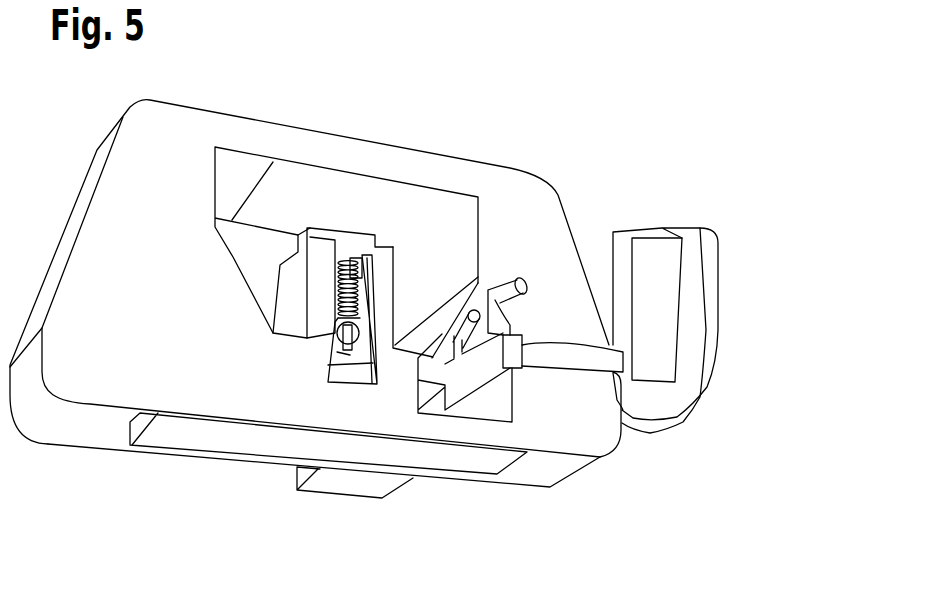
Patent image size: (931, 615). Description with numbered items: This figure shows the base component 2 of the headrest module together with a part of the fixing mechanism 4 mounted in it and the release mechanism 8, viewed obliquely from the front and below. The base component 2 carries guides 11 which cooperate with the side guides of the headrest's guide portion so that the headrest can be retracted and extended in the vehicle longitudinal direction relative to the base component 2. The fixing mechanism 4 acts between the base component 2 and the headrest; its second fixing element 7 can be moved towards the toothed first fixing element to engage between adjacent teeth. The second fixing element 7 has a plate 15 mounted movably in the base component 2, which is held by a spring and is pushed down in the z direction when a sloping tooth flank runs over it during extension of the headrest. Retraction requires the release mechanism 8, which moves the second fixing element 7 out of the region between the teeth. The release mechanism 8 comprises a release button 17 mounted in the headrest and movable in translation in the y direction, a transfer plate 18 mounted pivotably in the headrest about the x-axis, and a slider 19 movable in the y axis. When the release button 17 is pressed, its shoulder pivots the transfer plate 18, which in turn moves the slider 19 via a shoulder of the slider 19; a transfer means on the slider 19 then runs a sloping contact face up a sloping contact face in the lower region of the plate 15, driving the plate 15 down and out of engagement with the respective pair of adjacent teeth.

The base component 2 is at (560, 158).
The fixing mechanism 4 is at (171, 480).
The second fixing element 7 is at (317, 222).
The release mechanism 8 is at (732, 233).
The guides 11 is at (235, 262).
The plate 15 is at (352, 250).
The release button 17 is at (692, 298).
The transfer plate 18 is at (468, 377).
The slider 19 is at (250, 442).